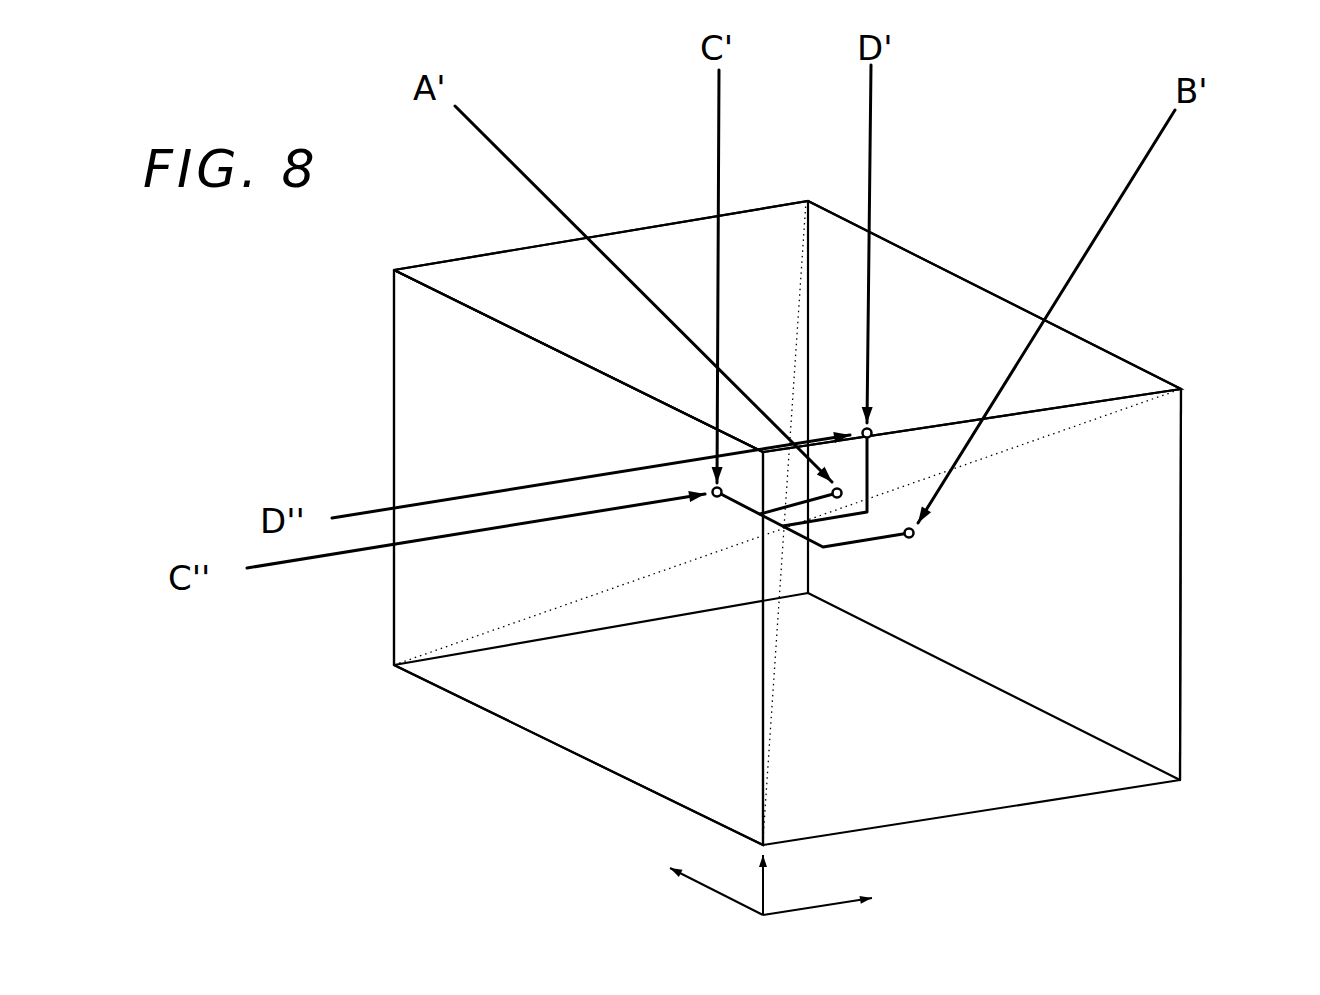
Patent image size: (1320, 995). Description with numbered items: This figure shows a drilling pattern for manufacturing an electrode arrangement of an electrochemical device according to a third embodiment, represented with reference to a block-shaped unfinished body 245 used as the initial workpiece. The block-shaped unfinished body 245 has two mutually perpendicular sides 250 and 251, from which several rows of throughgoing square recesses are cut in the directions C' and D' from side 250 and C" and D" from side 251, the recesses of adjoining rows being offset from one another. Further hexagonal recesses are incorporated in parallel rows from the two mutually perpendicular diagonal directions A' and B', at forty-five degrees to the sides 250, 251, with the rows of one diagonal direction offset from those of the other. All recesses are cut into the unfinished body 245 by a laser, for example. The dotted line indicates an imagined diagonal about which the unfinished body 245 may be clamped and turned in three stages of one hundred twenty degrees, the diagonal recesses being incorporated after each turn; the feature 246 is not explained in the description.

The block-shaped unfinished body 245 is at (1147, 365).
The corner edge 246 is at (1150, 400).
The side 250 is at (925, 303).
The side 251 is at (415, 332).